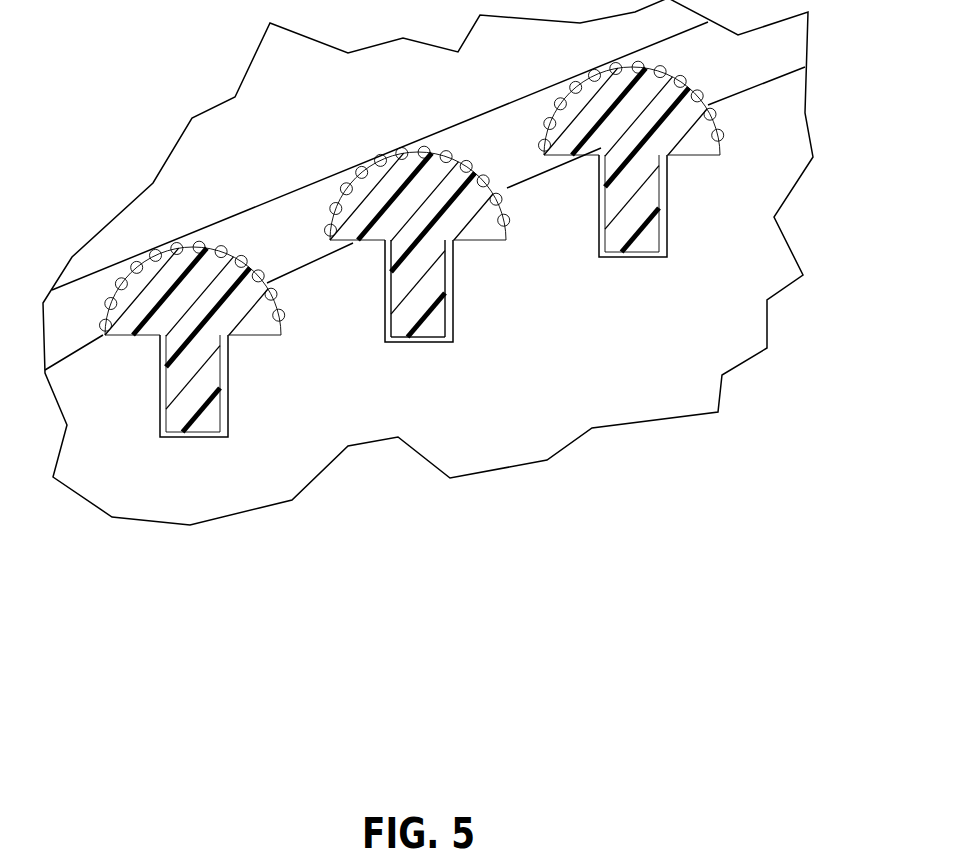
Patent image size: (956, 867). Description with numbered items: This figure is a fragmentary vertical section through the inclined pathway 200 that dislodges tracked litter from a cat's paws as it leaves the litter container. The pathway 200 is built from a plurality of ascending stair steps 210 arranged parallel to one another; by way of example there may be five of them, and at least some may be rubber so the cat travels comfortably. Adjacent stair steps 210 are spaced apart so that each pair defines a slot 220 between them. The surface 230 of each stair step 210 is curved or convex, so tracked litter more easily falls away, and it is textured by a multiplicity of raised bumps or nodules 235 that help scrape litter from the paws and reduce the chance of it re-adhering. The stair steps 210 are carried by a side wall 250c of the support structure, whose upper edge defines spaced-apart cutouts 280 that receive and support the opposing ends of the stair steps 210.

The pathway 200 is at (462, 116).
The stair steps 210 is at (617, 200).
The slot 220 is at (540, 193).
The surface 230 is at (352, 183).
The raised bumps or nodules 235 is at (420, 143).
The side wall 250c is at (285, 197).
The cutouts 280 is at (402, 337).